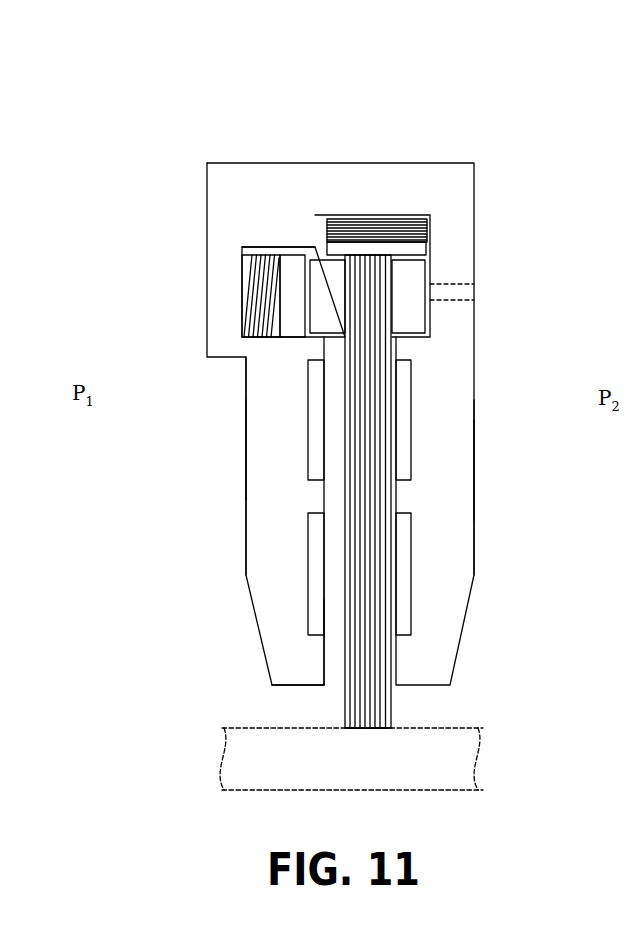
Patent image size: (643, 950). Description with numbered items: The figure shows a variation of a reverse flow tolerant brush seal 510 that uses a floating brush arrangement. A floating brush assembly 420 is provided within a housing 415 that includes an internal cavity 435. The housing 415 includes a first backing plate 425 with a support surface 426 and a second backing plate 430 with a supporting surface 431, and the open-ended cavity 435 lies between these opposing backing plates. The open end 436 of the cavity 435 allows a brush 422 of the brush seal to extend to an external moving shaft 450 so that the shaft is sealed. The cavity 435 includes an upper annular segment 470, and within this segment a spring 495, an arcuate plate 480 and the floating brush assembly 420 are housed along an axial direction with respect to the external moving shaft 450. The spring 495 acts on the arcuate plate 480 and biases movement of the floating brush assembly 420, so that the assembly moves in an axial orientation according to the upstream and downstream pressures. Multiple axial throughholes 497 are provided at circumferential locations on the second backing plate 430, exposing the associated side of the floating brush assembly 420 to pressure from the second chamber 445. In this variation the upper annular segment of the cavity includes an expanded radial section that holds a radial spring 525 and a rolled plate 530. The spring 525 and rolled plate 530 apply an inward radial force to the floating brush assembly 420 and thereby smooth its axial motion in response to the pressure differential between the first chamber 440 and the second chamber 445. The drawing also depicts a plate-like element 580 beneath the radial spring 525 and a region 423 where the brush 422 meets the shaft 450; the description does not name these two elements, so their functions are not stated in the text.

The reverse flow tolerant brush seal 510 is at (355, 53).
The housing 415 is at (457, 197).
The radial spring 525 is at (352, 225).
The spacer plate 580 is at (326, 250).
The rolled plate 530 is at (388, 252).
The arcuate plate 480 is at (290, 272).
The upper annular segment 470 is at (253, 248).
The spring 495 is at (262, 295).
The axial throughholes 497 is at (462, 303).
The floating brush assembly 420 is at (407, 293).
The brush 422 is at (377, 703).
The opening 423 is at (347, 730).
The first backing plate 425 is at (270, 555).
The support surface 426 is at (323, 495).
The second backing plate 430 is at (443, 612).
The supporting surface 431 is at (397, 492).
The cavity 435 is at (333, 648).
The open end 436 is at (333, 687).
The first chamber 440 is at (163, 405).
The second chamber 445 is at (577, 405).
The external moving shaft 450 is at (400, 778).